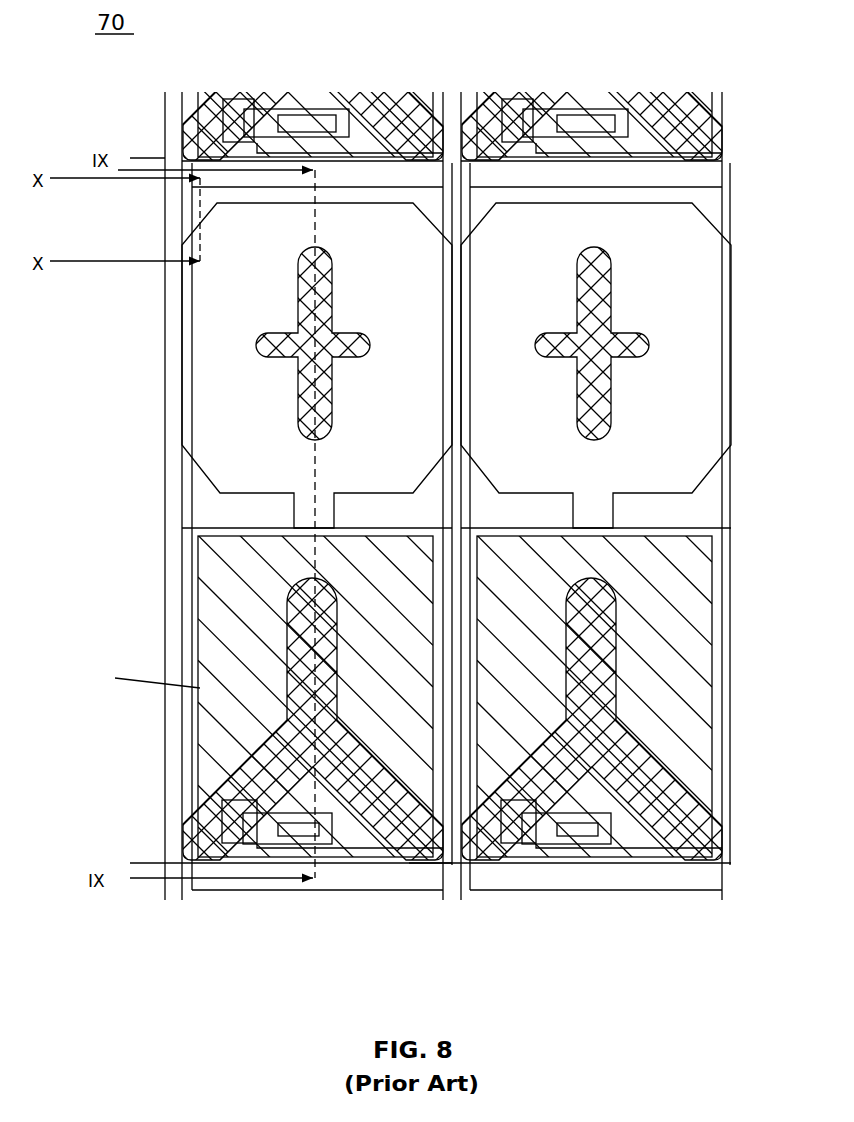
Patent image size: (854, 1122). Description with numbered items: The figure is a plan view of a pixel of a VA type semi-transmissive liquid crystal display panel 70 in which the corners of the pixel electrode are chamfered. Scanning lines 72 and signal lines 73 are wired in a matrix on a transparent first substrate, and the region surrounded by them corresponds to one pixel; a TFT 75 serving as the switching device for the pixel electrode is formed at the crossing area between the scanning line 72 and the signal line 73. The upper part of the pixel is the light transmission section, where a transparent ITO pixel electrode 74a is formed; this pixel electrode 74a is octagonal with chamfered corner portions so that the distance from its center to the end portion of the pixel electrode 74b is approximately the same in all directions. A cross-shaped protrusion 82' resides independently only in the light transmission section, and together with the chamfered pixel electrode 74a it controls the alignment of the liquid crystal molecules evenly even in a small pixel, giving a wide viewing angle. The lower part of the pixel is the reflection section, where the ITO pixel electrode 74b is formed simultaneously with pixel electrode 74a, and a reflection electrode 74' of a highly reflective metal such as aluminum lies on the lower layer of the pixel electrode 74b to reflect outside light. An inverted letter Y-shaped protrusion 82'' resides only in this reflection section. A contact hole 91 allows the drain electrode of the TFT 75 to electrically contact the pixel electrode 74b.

The array substrate pixel structure (prior art) 70 is at (452, 181).
The scanning line 72 is at (160, 157).
The signal line 73 is at (190, 890).
The reflection electrode 74' is at (244, 694).
The pixel electrode 74a is at (200, 473).
The pixel electrode 74b is at (182, 632).
The TFT 75 is at (245, 862).
The protrusion 82' is at (227, 343).
The protrusion 82'' is at (259, 719).
The contact hole 91 is at (302, 838).